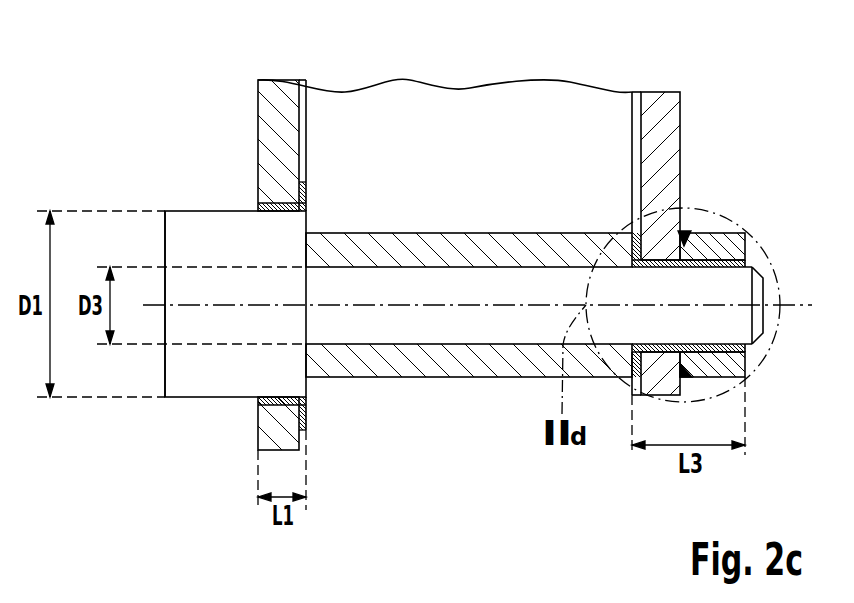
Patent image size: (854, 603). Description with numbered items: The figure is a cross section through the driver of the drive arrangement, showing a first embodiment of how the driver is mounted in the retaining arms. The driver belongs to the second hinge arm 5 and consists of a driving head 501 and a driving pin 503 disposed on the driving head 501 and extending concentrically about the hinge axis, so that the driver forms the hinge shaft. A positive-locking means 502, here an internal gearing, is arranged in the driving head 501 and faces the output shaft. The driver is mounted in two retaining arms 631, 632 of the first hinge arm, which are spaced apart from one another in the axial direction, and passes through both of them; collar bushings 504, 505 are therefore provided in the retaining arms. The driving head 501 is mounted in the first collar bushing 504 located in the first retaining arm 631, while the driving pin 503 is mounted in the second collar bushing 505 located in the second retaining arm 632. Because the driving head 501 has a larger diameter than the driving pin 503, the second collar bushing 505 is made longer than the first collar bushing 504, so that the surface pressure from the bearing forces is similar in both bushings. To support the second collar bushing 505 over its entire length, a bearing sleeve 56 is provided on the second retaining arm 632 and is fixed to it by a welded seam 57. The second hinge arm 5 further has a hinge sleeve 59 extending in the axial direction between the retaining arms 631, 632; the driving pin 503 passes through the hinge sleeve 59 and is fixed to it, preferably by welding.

The second hinge arm 5 is at (476, 108).
The first retaining arm 631 is at (273, 108).
The second retaining arm 632 is at (672, 110).
The driving head 501 is at (190, 232).
The positive-locking means 502 is at (165, 230).
The driving pin 503 is at (472, 328).
The first collar bushing 504 is at (263, 410).
The second collar bushing 505 is at (747, 260).
The bearing sleeve 56 is at (730, 248).
The welded seam 57 is at (685, 233).
The hinge sleeve 59 is at (474, 245).